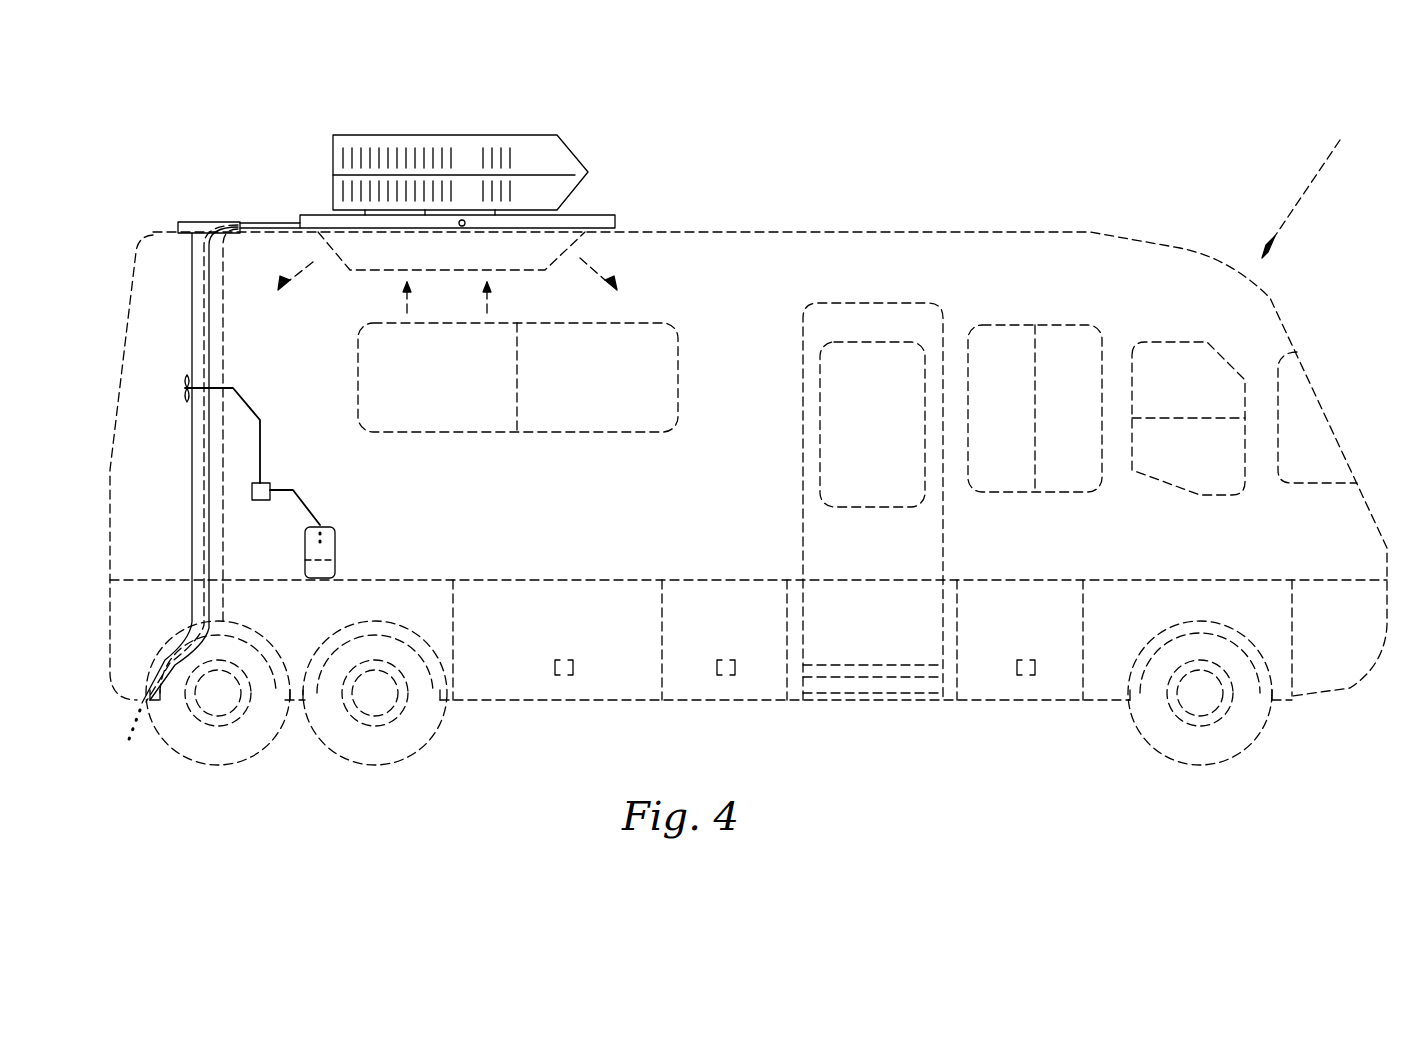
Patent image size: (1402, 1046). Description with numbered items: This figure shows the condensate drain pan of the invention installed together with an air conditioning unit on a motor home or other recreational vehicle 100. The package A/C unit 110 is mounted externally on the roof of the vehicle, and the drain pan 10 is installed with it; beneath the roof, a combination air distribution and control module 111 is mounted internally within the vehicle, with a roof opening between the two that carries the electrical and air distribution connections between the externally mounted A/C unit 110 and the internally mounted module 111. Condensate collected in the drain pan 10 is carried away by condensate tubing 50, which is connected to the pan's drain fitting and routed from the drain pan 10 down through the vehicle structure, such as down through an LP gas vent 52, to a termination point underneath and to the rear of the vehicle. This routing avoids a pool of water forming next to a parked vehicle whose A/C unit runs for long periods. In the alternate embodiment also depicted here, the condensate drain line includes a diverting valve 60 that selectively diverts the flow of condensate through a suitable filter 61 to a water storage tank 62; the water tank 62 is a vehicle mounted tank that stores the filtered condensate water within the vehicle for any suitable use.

The recreational vehicle 100 is at (748, 439).
The A/C unit 110 is at (470, 135).
The drain pan 10 is at (610, 215).
The air distribution and control module 111 is at (363, 272).
The LP gas vent 52 is at (190, 220).
The condensate tubing 50 is at (285, 215).
The diverting valve 60 is at (190, 388).
The filter 61 is at (270, 488).
The water storage tank 62 is at (335, 530).